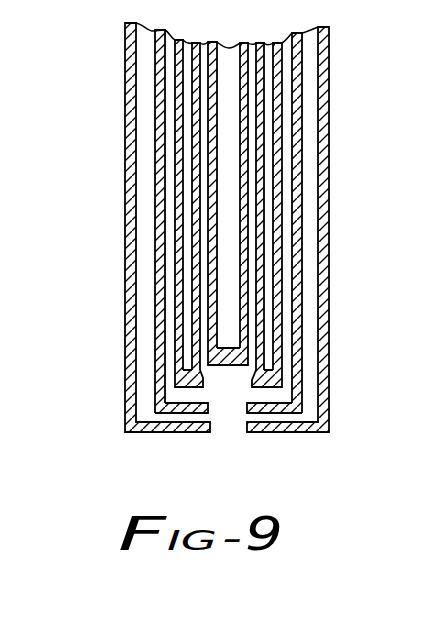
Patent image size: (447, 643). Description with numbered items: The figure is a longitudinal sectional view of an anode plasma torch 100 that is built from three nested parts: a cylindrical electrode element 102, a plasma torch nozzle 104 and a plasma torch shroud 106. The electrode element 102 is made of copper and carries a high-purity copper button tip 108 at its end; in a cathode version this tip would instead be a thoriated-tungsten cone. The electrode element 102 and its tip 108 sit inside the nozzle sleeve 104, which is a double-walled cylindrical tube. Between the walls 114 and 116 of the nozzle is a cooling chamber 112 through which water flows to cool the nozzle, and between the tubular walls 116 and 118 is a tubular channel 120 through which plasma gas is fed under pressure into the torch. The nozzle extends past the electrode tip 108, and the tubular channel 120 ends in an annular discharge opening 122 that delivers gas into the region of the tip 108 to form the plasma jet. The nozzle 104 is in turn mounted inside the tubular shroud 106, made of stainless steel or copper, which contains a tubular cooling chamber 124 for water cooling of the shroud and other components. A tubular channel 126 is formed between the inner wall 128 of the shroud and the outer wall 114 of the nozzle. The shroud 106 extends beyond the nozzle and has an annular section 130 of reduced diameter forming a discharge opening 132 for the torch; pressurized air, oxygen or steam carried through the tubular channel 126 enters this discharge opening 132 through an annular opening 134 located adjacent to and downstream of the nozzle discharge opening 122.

The plasma torch 100 is at (64, 115).
The cylindrical electrode element 102 is at (212, 289).
The plasma torch nozzle 104 is at (192, 344).
The plasma torch shroud 106 is at (123, 404).
The copper button tip 108 is at (223, 367).
The cooling chamber 112 is at (272, 143).
The wall 114 is at (178, 43).
The wall 116 is at (262, 58).
The tubular wall 118 is at (243, 45).
The tubular channel 120 is at (248, 303).
The annular discharge opening 122 is at (205, 374).
The tubular cooling chamber 124 is at (308, 395).
The tubular channel 126 is at (168, 181).
The inner wall 128 is at (157, 137).
The annular section 130 is at (304, 433).
The discharge opening 132 is at (242, 416).
The annular opening 134 is at (204, 393).